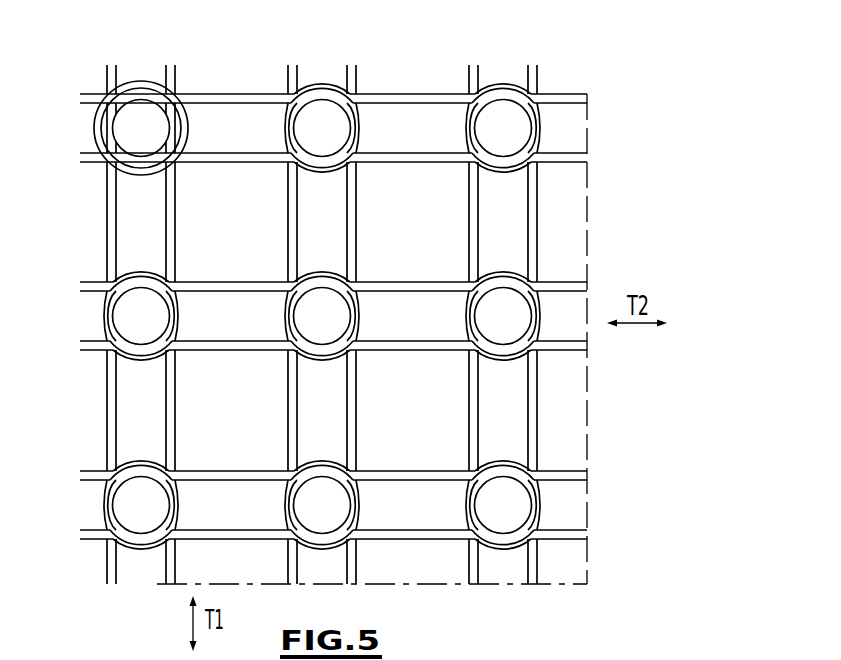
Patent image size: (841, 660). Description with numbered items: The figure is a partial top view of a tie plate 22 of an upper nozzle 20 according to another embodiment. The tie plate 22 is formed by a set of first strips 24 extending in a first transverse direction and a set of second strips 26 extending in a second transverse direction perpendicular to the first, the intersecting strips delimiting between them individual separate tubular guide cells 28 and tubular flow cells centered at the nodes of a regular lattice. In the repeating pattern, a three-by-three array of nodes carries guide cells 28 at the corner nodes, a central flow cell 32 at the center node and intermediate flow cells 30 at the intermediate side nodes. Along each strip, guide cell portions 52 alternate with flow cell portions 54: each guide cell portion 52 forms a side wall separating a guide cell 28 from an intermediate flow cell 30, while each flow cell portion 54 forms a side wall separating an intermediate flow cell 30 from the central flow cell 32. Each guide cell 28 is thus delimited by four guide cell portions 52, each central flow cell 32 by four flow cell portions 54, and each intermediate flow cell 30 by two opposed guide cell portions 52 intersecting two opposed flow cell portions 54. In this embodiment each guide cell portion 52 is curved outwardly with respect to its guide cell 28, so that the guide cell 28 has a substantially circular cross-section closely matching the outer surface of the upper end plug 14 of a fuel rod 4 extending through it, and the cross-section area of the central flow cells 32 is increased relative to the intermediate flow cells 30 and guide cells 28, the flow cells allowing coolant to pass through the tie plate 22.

The fuel rod 4 is at (93, 130).
The upper end plug 14 is at (128, 136).
The upper nozzle 20 is at (662, 297).
The tie plate 22 is at (439, 84).
The first strips 24 is at (473, 586).
The second strips 26 is at (590, 94).
The guide cell 28 is at (351, 97).
The intermediate flow cell 30 is at (425, 140).
The central flow cell 32 is at (424, 235).
The guide cell portion 52 is at (541, 125).
The flow cell portion 54 is at (537, 237).